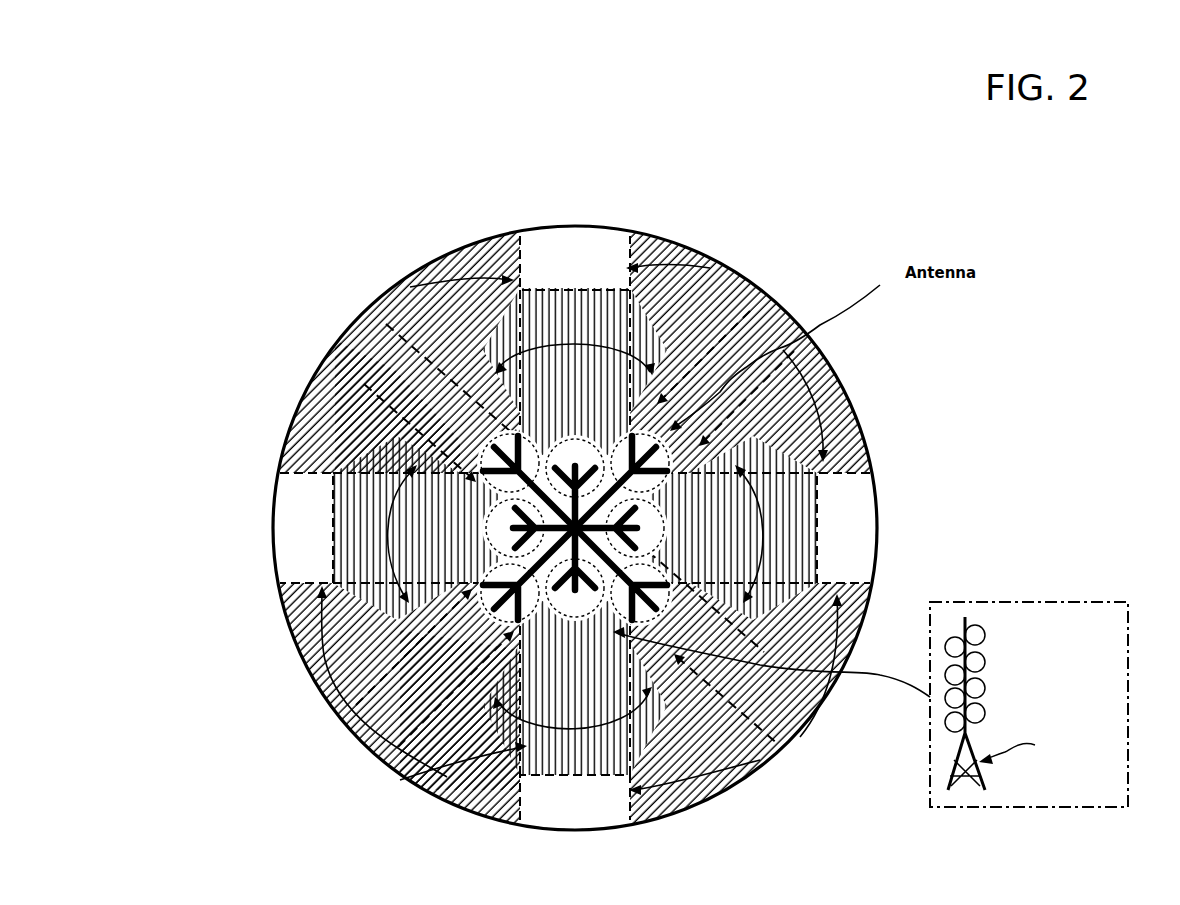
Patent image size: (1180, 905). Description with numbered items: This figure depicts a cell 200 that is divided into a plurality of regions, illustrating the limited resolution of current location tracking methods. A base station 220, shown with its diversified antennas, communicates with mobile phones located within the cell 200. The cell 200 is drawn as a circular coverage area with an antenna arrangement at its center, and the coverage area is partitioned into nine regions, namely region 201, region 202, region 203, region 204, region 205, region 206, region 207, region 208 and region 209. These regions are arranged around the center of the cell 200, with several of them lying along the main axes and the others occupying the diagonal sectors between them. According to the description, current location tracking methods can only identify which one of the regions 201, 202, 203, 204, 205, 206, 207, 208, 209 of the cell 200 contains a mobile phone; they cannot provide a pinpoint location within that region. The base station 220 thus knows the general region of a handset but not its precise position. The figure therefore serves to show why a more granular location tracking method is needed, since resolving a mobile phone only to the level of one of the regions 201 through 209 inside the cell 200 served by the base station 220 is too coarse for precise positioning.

The cell 200 is at (530, 165).
The region 201 is at (447, 278).
The region 202 is at (510, 325).
The region 203 is at (325, 520).
The region 204 is at (360, 670).
The region 205 is at (513, 788).
The region 206 is at (697, 740).
The region 207 is at (815, 530).
The region 208 is at (837, 405).
The region 209 is at (590, 318).
The base station 220 is at (1043, 590).